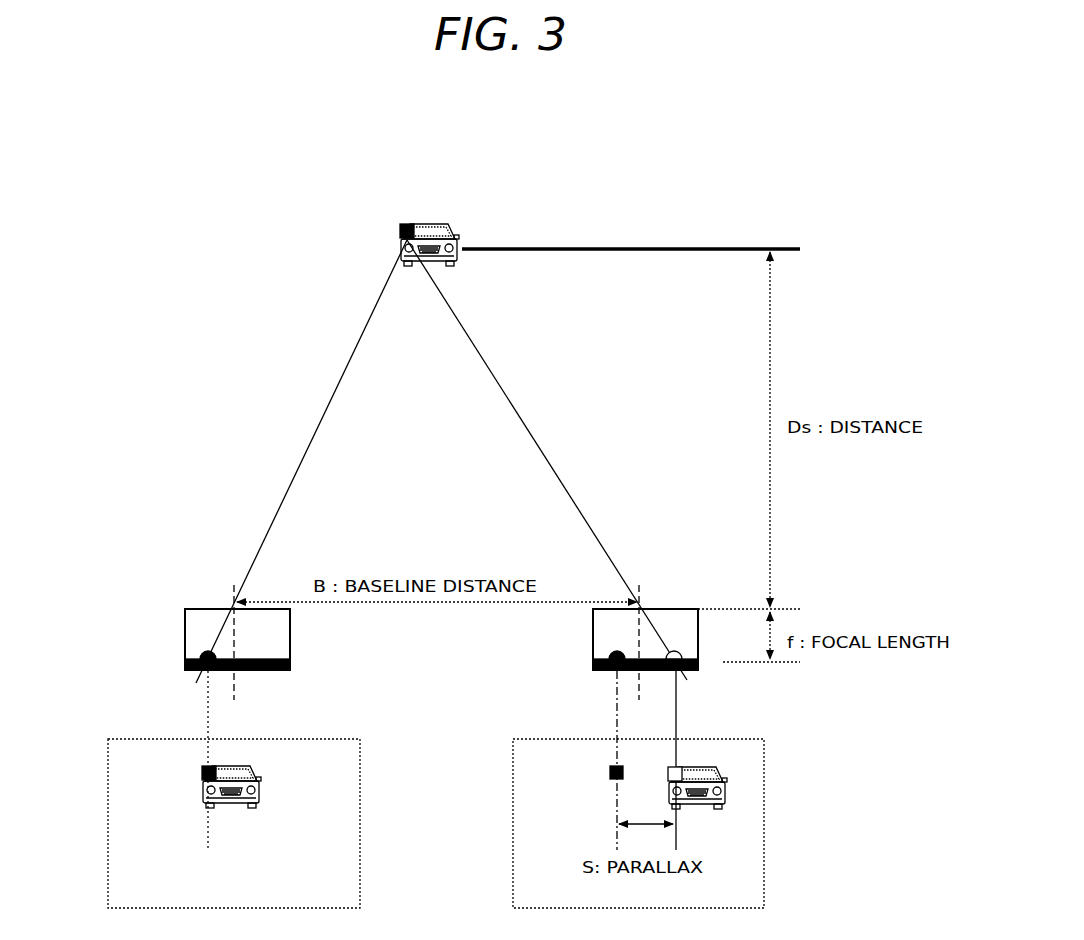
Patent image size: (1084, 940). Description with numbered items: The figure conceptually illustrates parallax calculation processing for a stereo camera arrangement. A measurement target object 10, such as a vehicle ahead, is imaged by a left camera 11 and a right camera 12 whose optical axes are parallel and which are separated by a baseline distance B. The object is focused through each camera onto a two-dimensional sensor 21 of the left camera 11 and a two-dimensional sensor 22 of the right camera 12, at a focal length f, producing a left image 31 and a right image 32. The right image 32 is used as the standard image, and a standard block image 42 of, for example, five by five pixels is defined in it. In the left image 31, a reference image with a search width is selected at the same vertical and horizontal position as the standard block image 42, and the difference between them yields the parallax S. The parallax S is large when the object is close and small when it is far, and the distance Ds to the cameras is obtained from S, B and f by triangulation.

The measurement target object 10 is at (432, 224).
The left camera 11 is at (207, 611).
The right camera 12 is at (662, 611).
The two-dimensional sensor 21 is at (191, 665).
The two-dimensional sensor 22 is at (597, 665).
The left image 31 is at (112, 818).
The right image 32 is at (516, 818).
The standard block image 42 is at (680, 766).